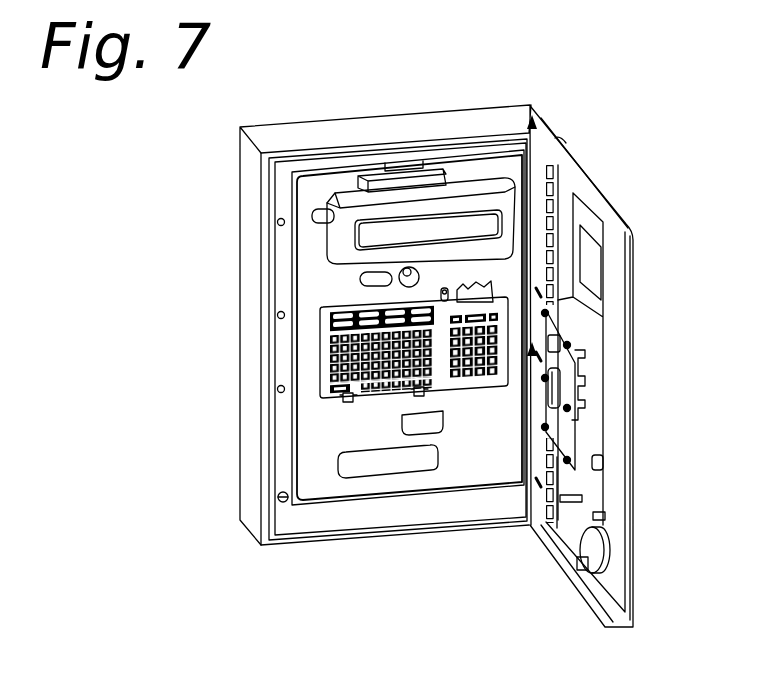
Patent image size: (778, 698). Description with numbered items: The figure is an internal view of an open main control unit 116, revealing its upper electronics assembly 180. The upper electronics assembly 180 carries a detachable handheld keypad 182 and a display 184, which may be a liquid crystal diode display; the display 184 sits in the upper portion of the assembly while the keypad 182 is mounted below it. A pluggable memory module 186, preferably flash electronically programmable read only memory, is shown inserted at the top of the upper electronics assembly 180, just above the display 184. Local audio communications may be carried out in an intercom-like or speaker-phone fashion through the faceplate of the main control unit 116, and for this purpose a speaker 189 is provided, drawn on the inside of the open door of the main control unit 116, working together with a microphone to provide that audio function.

The main control unit 116 is at (425, 533).
The upper electronics assembly 180 is at (294, 465).
The detachable handheld keypad 182 is at (320, 395).
The display 184 is at (422, 228).
The pluggable memory module 186 is at (413, 172).
The speaker 189 is at (590, 555).